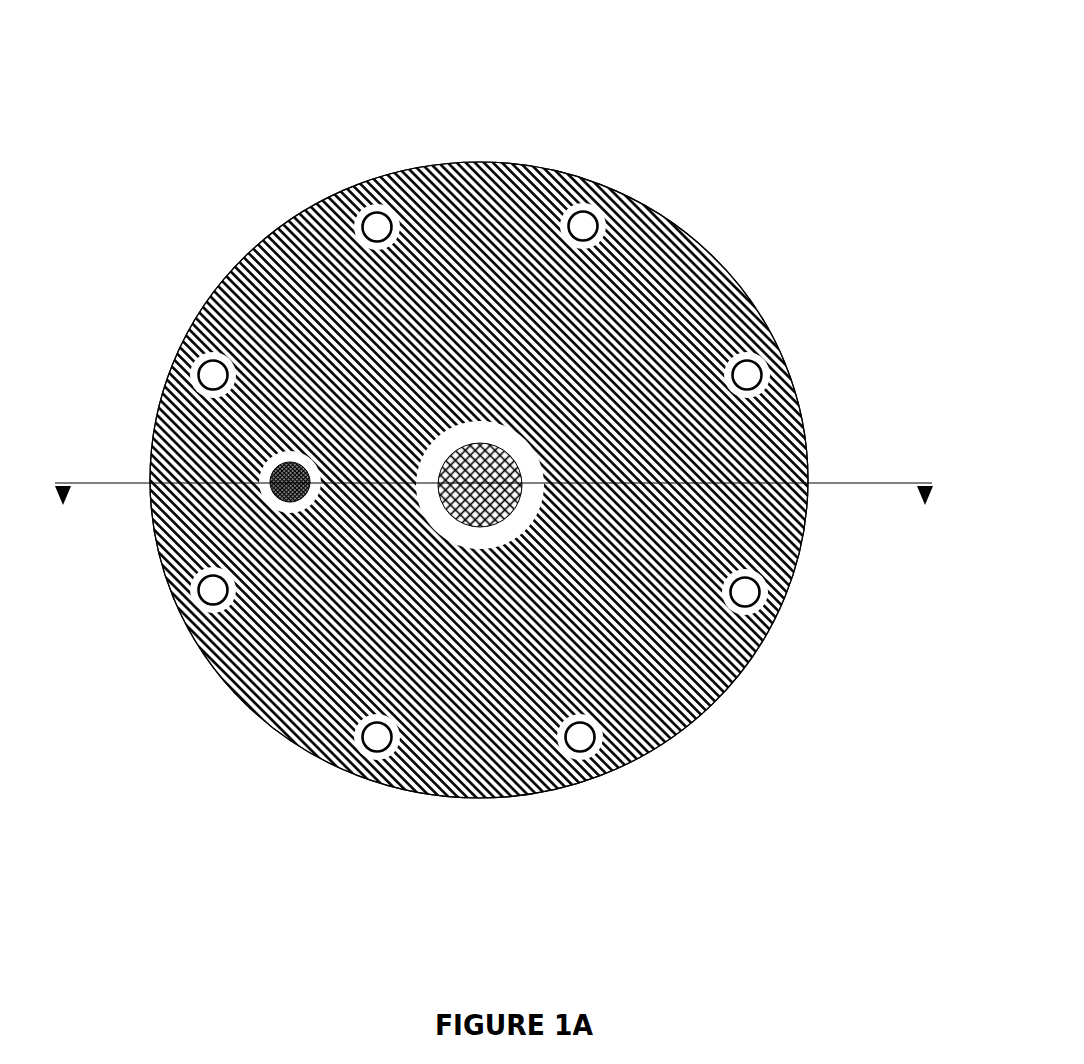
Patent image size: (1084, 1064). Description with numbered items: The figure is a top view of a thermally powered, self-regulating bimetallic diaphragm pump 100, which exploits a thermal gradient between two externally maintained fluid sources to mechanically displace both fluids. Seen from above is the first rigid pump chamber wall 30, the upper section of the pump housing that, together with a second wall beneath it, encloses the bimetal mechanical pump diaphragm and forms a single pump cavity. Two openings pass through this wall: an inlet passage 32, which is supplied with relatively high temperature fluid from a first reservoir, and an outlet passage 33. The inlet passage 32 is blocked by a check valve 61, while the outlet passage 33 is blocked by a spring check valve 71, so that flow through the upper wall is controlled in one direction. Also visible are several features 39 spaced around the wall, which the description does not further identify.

The bimetallic diaphragm pump 100 is at (315, 70).
The first rigid pump chamber wall 30 is at (230, 688).
The outlet passage 33 is at (705, 702).
The check valve 61 is at (163, 405).
The mounting holes 39 is at (745, 375).
The spring check valve 71 is at (520, 477).
The inlet passage 32 is at (270, 479).